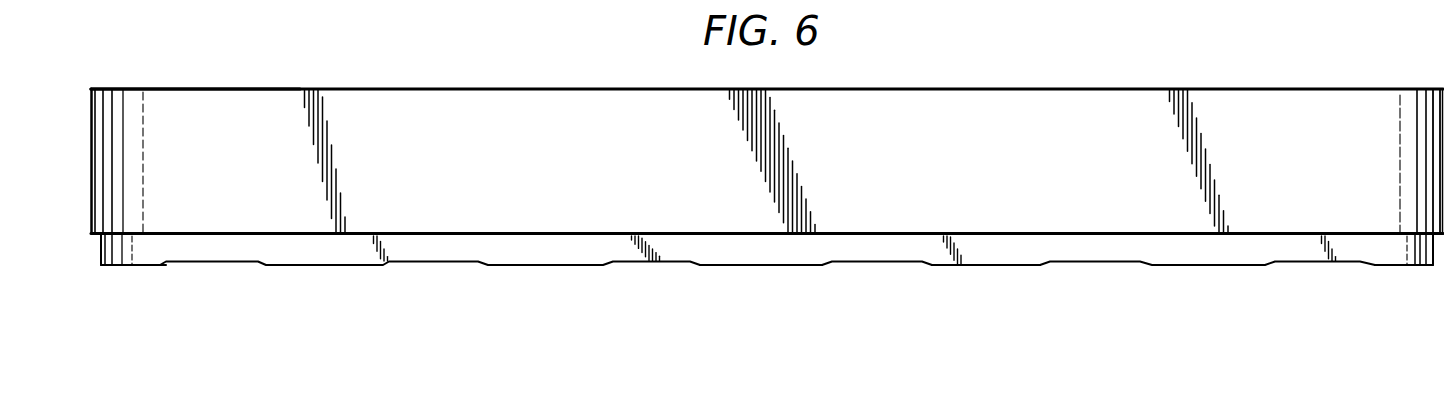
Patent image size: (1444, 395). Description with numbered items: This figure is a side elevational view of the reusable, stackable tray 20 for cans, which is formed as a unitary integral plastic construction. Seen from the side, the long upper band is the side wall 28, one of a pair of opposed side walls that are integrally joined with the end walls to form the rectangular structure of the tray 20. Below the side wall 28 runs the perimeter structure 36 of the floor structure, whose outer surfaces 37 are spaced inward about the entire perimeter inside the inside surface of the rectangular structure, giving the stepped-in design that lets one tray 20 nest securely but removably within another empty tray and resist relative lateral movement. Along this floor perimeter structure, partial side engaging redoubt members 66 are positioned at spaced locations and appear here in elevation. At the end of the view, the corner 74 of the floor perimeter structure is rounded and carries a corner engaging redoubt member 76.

The tray 20 is at (149, 52).
The side wall 28 is at (1047, 103).
The perimeter structure 36 is at (243, 249).
The outer surfaces 37 is at (746, 252).
The partial side engaging redoubt member 66 is at (1022, 246).
The corner 74 is at (161, 275).
The corner engaging redoubt member 76 is at (1388, 247).